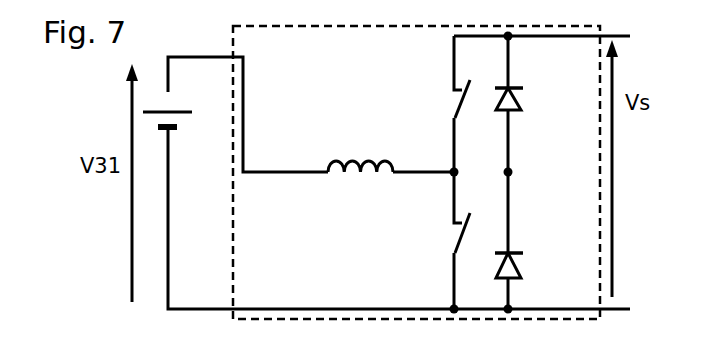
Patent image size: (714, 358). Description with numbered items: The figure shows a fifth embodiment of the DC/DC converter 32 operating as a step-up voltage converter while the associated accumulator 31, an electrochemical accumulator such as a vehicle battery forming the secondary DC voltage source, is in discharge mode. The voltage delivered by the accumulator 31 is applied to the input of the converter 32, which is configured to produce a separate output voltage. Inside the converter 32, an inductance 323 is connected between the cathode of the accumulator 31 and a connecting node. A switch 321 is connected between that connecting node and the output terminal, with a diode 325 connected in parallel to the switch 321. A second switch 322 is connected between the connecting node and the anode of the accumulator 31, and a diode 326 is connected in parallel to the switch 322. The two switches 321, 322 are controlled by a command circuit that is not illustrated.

The secondary DC voltage source 31 is at (177, 131).
The DC/DC converter 32 is at (417, 321).
The switch 321 is at (452, 118).
The switch 322 is at (452, 253).
The inductance 323 is at (337, 160).
The diode 325 is at (517, 100).
The diode 326 is at (518, 257).